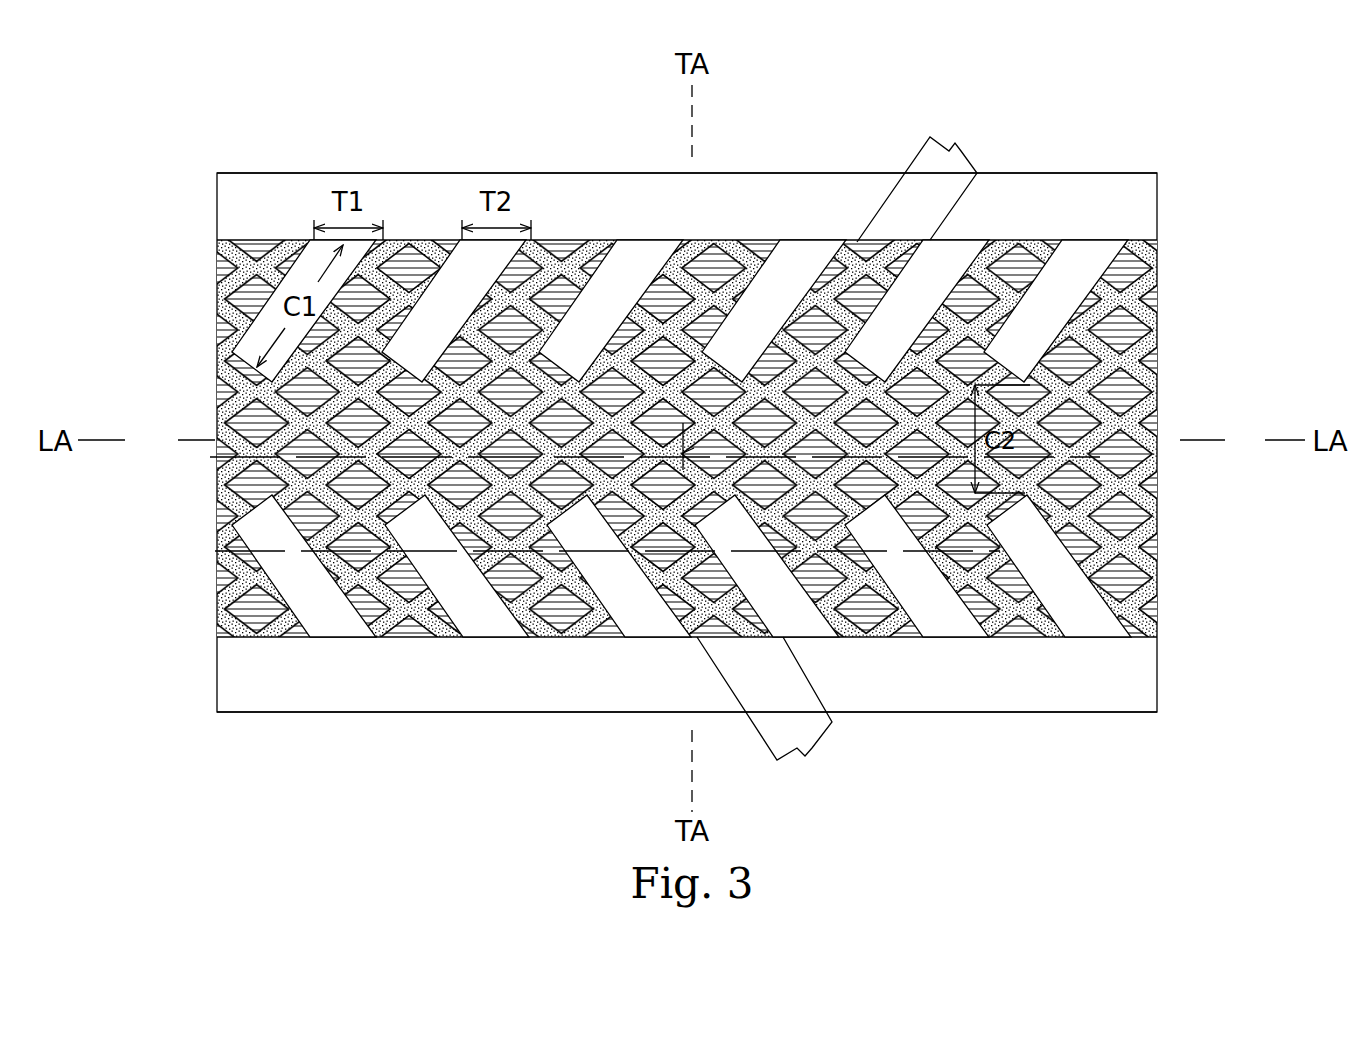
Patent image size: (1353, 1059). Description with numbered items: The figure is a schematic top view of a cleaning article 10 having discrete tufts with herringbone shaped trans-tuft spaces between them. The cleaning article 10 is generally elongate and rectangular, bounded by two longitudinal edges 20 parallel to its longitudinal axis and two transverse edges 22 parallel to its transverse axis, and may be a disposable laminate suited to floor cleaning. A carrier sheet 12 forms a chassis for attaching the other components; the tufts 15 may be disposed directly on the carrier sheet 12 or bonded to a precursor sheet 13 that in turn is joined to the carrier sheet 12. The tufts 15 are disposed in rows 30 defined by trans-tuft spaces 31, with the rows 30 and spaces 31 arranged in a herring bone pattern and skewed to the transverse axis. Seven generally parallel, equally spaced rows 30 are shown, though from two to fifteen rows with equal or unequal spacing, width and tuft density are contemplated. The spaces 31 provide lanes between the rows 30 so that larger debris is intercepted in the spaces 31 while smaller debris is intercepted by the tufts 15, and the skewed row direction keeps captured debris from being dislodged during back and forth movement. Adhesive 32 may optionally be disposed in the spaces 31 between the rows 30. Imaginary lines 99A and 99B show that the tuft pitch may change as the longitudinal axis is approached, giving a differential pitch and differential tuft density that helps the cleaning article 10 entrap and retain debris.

The cleaning article 10 is at (822, 103).
The carrier sheet 12 is at (680, 192).
The precursor sheet 13 is at (1148, 362).
The tufts 15 is at (243, 432).
The longitudinal edges 20 is at (868, 173).
The transverse edges 22 is at (1157, 188).
The rows 30 is at (842, 449).
The spaces 31 is at (1064, 295).
The adhesive 32 is at (640, 257).
The imaginary line 99A is at (576, 552).
The imaginary line 99B is at (195, 446).